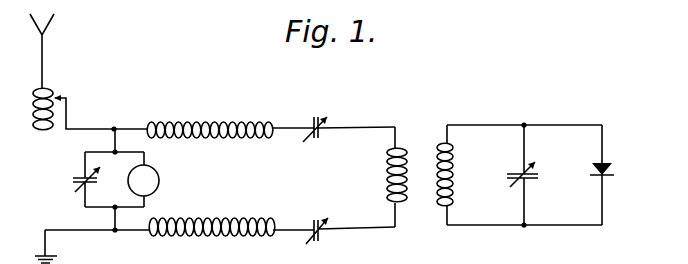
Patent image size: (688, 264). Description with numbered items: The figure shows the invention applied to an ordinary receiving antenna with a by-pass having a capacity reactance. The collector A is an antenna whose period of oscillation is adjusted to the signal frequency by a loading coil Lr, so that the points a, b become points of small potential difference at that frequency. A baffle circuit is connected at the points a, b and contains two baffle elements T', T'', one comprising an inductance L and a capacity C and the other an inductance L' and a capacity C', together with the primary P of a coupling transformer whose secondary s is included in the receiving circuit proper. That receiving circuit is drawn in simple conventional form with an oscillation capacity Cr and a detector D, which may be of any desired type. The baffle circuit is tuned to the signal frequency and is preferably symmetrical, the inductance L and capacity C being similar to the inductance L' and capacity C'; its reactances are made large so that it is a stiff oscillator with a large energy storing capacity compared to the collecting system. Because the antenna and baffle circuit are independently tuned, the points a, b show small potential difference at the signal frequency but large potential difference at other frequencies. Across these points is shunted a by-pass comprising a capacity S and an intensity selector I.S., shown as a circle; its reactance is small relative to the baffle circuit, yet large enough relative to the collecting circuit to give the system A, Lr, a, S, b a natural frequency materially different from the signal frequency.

The collector A is at (33, 51).
The loading coil Lr is at (57, 109).
The point a is at (127, 127).
The point b is at (92, 235).
The capacity S is at (98, 179).
The intensity selector I.S. is at (143, 179).
The inductance L is at (230, 143).
The inductance L' is at (231, 213).
The baffle element T' is at (335, 129).
The baffle element T'' is at (333, 227).
The capacity C is at (315, 141).
The capacity C' is at (317, 217).
The primary P is at (384, 177).
The secondary s is at (480, 175).
The oscillation capacity Cr is at (537, 174).
The detector D is at (583, 175).